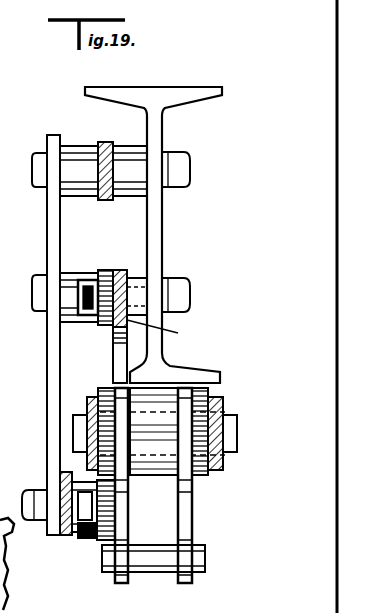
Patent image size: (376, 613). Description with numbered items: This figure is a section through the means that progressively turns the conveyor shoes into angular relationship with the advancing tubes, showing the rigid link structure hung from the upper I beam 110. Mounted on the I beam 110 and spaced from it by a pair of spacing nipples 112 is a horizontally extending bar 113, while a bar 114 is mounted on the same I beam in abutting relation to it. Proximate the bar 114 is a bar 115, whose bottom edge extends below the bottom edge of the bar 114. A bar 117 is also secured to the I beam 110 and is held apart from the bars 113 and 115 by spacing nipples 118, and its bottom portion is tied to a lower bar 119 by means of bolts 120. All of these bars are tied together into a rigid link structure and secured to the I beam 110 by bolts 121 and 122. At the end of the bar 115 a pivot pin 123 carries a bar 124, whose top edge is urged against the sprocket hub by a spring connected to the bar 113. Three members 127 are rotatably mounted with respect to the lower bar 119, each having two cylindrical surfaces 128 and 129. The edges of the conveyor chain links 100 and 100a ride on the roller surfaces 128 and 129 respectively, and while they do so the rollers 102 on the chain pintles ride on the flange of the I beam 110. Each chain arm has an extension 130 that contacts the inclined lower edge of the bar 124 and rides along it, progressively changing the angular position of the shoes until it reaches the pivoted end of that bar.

The upper I beam 110 is at (172, 87).
The spacing nipples 112 is at (130, 197).
The horizontally extending bar 113 is at (104, 141).
The bar 114 is at (140, 279).
The bar 115 is at (114, 269).
The bar 117 is at (48, 337).
The spacing nipples 118 is at (73, 197).
The bar 119 is at (62, 536).
The bolts 120 is at (32, 490).
The bolt 121 is at (32, 168).
The bolt 122 is at (32, 291).
The pivot pin 123 is at (83, 313).
The bar 124 is at (168, 332).
The member 127 is at (110, 518).
The cylindrical surface 128 is at (101, 548).
The cylindrical surface 129 is at (84, 539).
The extension 130 is at (113, 352).
The links 100 is at (110, 427).
The links 100a is at (86, 395).
The rollers 102 is at (153, 485).